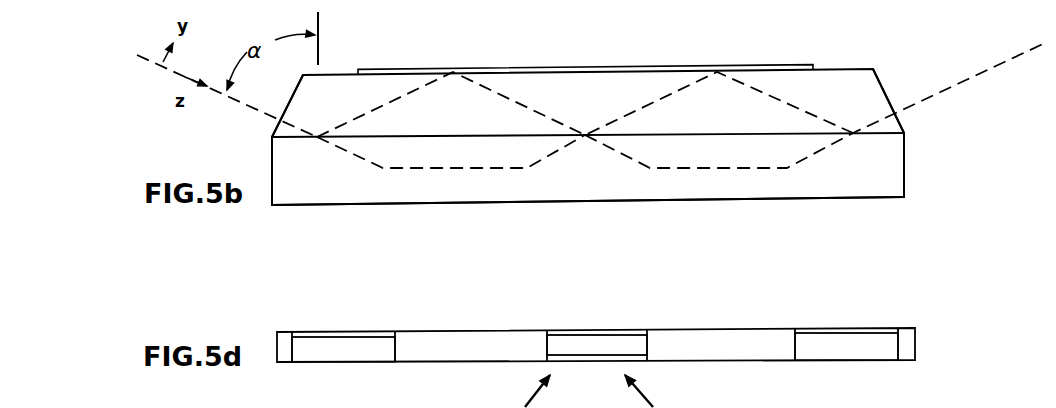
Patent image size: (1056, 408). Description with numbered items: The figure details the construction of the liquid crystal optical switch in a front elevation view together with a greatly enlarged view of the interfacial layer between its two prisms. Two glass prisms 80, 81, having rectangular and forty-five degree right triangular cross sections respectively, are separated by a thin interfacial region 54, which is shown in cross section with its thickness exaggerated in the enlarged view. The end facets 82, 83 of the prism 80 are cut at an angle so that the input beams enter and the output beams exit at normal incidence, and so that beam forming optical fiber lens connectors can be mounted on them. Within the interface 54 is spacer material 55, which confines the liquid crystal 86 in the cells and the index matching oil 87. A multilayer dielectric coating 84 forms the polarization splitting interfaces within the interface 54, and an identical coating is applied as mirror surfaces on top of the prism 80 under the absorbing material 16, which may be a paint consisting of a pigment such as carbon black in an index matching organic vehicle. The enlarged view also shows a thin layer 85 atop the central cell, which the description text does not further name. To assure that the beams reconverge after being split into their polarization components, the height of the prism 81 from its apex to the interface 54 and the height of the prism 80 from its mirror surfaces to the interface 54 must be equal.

In FIG. 5B, the absorbing material 16 is at (443, 69).
In FIG. 5B, the interfacial region 54 is at (904, 133).
In FIG. 5B, the glass prism 80 is at (857, 90).
In FIG. 5B, the glass prism 81 is at (853, 193).
In FIG. 5B, the end facet 82 is at (273, 131).
In FIG. 5B, the end facet 83 is at (890, 93).
In FIG. 5D, the spacer material 55 is at (285, 338).
In FIG. 5D, the multilayer dielectric coating 84 is at (363, 332).
In FIG. 5D, the reflective strip 85 is at (570, 332).
In FIG. 5D, the liquid crystal 86 is at (603, 343).
In FIG. 5D, the index matching oil 87 is at (363, 353).